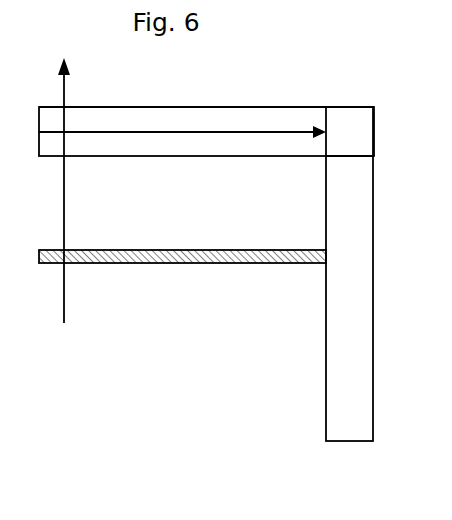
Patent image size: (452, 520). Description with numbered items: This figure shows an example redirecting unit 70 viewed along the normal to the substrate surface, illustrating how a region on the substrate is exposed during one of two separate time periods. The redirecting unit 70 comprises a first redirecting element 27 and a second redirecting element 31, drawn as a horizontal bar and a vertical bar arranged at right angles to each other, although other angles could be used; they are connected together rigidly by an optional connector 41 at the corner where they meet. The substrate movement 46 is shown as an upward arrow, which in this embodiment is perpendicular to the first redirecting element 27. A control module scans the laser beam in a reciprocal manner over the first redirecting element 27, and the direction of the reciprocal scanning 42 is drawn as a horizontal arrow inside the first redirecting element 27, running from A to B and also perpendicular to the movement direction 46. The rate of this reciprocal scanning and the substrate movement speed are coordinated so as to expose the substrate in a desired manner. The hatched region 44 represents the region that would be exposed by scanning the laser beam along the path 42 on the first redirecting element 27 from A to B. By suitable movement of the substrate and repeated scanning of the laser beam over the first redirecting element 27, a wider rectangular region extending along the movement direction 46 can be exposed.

The redirecting unit 70 is at (144, 366).
The first redirecting element 27 is at (234, 118).
The reciprocal scanning direction 42 is at (200, 130).
The connector 41 is at (363, 120).
The second redirecting element 31 is at (363, 310).
The region 44 is at (200, 255).
The substrate movement 46 is at (64, 215).
The scan start point A is at (39, 132).
The scan end point B is at (328, 130).